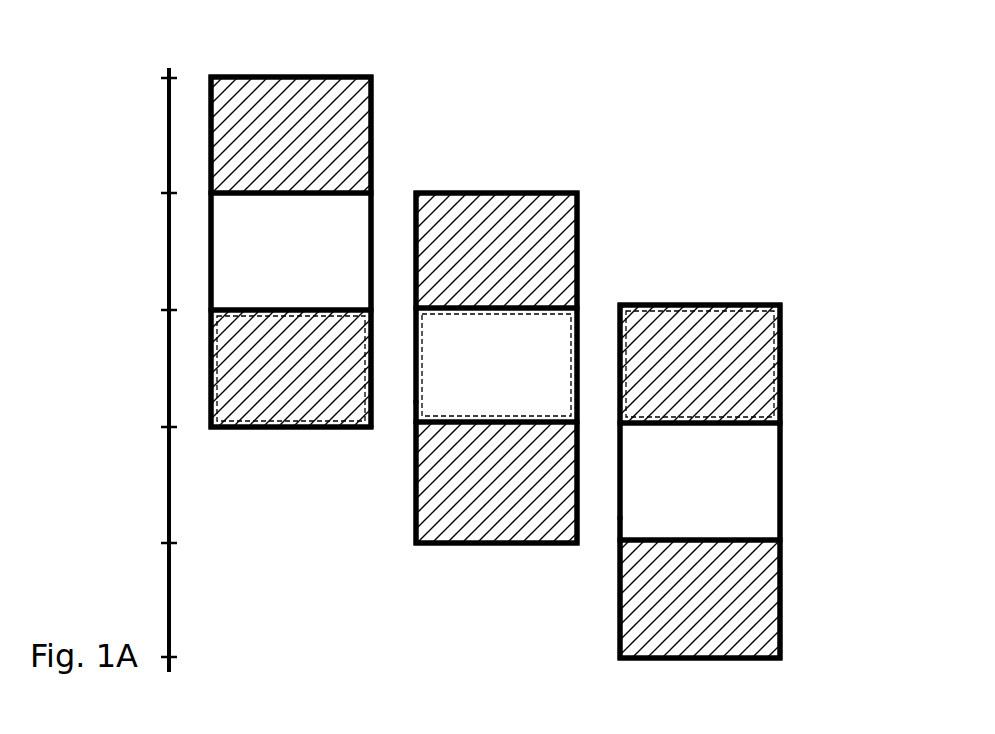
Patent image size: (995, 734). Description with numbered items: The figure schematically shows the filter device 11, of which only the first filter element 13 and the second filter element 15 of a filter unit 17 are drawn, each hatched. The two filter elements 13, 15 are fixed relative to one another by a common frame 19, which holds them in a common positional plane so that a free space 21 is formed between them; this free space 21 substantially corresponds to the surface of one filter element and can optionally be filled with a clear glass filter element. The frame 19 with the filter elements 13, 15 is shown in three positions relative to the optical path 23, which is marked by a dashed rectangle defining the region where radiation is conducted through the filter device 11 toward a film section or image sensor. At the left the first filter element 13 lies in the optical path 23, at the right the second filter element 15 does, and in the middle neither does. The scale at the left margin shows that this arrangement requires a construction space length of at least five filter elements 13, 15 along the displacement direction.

The filter device 11 is at (495, 352).
The first filter element 13 is at (274, 382).
The second filter element 15 is at (276, 160).
The filter unit 17 is at (361, 320).
The frame 19 is at (477, 512).
The free space 21 is at (274, 271).
The optical path 23 is at (495, 387).